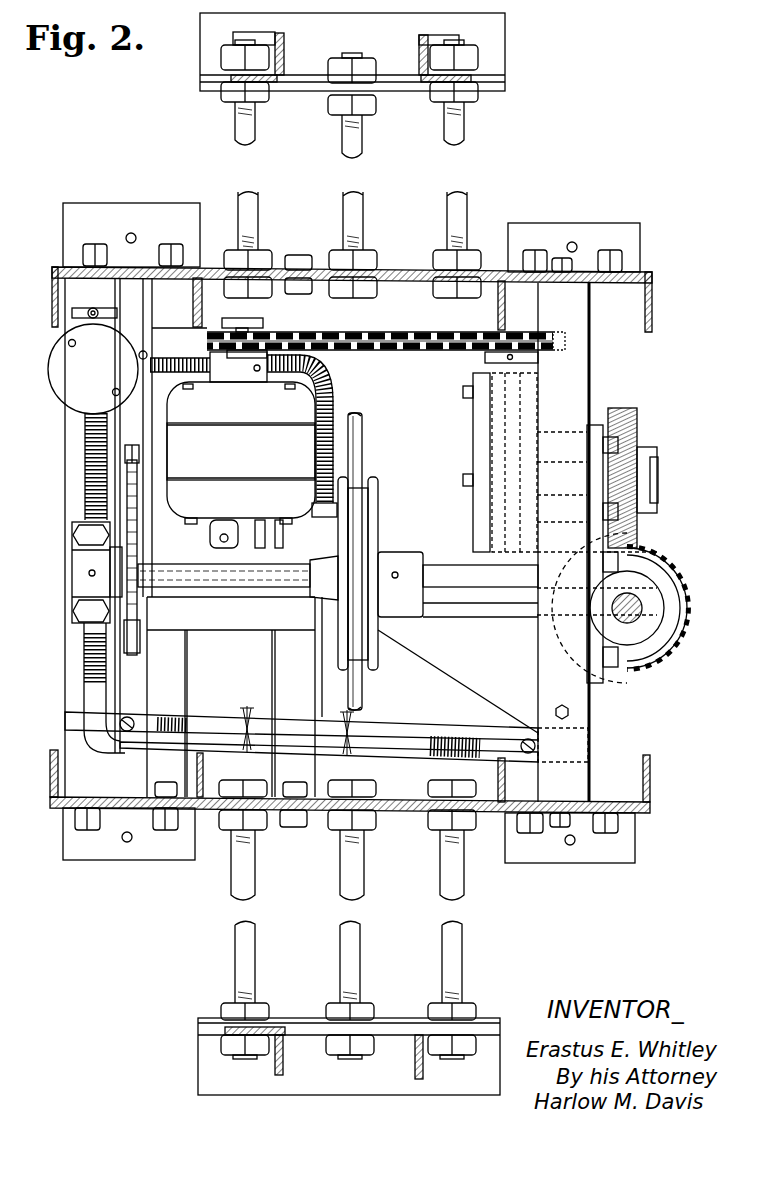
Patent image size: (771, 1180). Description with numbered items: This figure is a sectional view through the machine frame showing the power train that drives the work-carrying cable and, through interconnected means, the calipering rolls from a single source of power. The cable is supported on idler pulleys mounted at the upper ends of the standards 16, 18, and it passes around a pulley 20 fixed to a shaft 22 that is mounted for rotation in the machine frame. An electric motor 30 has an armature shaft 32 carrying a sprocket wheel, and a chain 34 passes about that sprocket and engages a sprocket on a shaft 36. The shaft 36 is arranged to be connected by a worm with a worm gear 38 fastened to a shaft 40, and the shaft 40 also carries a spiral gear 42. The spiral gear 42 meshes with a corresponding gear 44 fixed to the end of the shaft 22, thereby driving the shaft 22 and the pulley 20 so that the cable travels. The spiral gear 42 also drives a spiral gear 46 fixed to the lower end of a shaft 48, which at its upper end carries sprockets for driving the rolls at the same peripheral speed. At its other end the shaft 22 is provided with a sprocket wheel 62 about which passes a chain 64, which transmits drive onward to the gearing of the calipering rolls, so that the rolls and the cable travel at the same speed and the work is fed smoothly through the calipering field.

The standard 16 is at (305, 1022).
The standard 18 is at (296, 83).
The pulley 20 is at (372, 487).
The shaft 22 is at (447, 562).
The electric motor 30 is at (243, 450).
The armature shaft 32 is at (252, 351).
The chain 34 is at (387, 332).
The shaft 36 is at (497, 368).
The worm gear 38 is at (510, 425).
The shaft 40 is at (658, 472).
The spiral gear 42 is at (630, 408).
The spiral gear 44 is at (657, 660).
The spiral gear 46 is at (680, 580).
The shaft 48 is at (633, 620).
The sprocket wheel 62 is at (137, 535).
The chain 64 is at (139, 450).